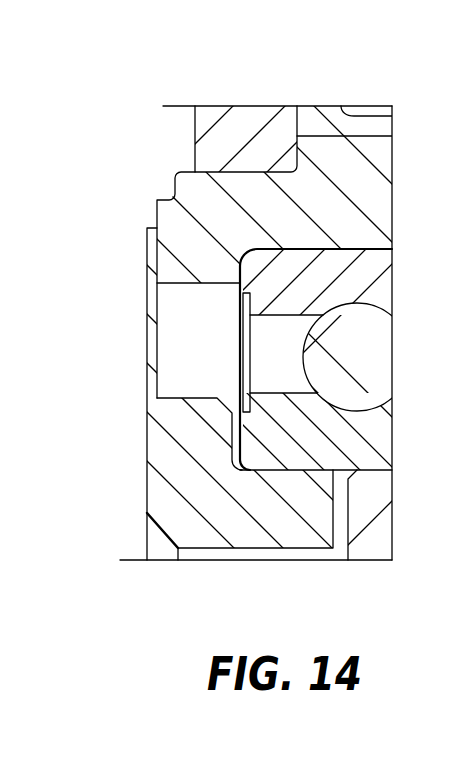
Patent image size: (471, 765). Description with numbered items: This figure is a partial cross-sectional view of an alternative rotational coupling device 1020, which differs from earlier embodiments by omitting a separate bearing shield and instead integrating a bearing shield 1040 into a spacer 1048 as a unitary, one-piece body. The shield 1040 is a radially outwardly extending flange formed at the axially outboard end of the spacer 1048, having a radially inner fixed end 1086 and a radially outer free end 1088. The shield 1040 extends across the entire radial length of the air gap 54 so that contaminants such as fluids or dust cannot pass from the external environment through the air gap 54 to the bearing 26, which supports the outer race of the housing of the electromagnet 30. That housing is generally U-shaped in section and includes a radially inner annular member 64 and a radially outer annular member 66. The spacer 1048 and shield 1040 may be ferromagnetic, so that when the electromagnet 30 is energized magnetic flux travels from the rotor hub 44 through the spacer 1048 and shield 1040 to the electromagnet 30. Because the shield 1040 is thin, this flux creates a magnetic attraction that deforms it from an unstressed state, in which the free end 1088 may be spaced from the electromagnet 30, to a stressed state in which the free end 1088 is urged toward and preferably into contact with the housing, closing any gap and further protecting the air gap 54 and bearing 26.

The rotational coupling device 1020 is at (147, 148).
The electromagnet 30 is at (305, 97).
The radially outer annular member 66 is at (241, 130).
The radially inner annular member 64 is at (358, 188).
The radially outer free end 1088 is at (140, 240).
The bearing shield 1040 is at (152, 310).
The air gap 54 is at (200, 360).
The bearing 26 is at (358, 370).
The radially inner fixed end 1086 is at (140, 398).
The rotor hub 44 is at (367, 507).
The spacer 1048 is at (287, 528).